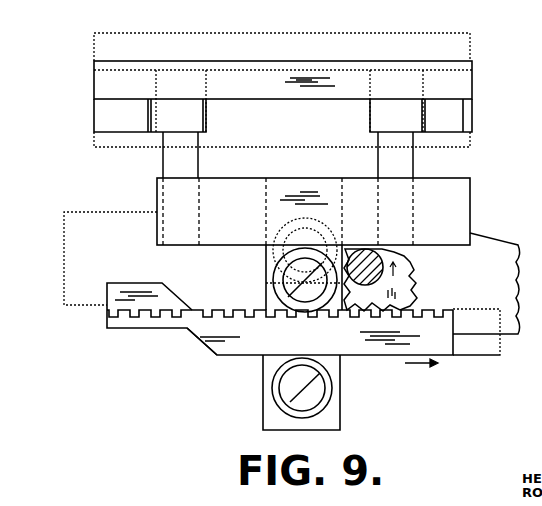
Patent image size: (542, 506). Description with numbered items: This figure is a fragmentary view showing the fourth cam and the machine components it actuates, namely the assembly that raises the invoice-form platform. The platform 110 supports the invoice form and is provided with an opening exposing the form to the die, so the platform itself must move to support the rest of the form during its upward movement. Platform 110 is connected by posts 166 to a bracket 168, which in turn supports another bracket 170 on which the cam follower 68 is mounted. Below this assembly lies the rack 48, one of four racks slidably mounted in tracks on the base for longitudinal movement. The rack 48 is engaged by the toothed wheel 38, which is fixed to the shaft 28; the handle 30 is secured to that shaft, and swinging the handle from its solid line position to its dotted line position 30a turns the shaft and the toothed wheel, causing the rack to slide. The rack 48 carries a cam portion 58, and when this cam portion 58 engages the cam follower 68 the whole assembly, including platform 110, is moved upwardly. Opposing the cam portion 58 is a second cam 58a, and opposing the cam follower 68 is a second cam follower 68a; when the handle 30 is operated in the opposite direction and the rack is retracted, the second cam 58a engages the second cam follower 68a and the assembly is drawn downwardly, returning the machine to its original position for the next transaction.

The platform 110 is at (467, 78).
The posts 166 is at (163, 143).
The bracket 168 is at (465, 204).
The bracket 170 is at (266, 255).
The cam follower 68 is at (307, 309).
The second cam follower 68a is at (330, 389).
The shaft 28 is at (362, 248).
The toothed wheel 38 is at (418, 268).
The rack 48 is at (117, 318).
The cam portion 58 is at (177, 296).
The second cam 58a is at (197, 343).
The handle 30 is at (512, 288).
The dotted line position of handle 30a is at (77, 250).